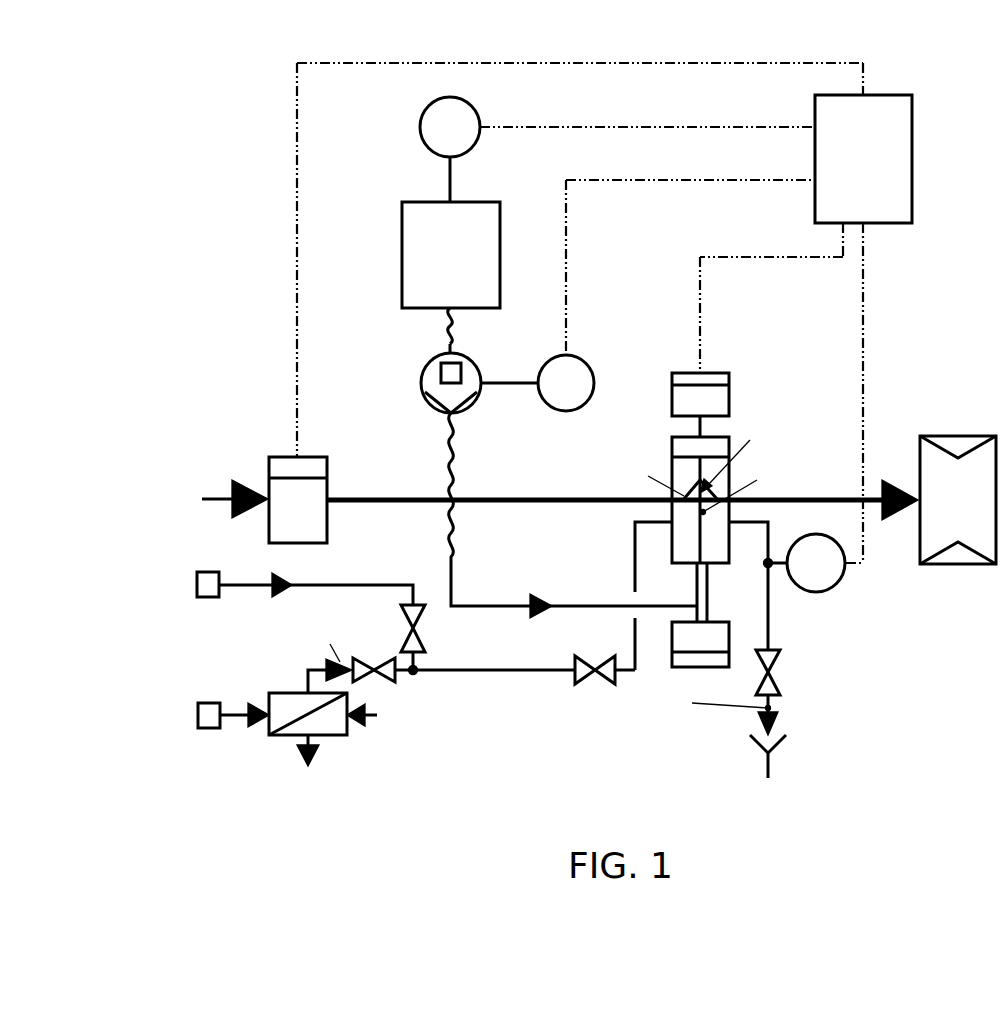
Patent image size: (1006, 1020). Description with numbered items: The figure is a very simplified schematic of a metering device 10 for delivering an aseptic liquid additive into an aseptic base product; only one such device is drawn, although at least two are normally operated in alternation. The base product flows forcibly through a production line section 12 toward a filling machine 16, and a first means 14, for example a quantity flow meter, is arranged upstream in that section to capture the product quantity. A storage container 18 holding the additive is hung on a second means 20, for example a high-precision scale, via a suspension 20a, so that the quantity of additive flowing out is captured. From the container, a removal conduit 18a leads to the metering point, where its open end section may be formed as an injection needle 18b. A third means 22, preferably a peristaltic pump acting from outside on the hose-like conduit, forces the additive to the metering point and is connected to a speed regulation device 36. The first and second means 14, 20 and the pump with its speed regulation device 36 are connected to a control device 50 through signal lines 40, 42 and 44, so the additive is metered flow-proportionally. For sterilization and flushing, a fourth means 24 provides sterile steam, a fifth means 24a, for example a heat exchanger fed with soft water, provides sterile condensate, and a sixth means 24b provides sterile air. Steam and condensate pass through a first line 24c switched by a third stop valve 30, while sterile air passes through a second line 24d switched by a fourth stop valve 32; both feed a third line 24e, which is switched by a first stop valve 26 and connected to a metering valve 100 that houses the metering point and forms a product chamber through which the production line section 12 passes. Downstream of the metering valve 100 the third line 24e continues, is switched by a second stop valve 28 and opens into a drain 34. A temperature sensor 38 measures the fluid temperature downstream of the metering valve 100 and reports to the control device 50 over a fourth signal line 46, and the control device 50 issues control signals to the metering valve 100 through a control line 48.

The metering device 10 is at (270, 112).
The production line section 12 is at (523, 498).
The first means 14 is at (258, 500).
The filling machine 16 is at (958, 500).
The storage container 18 is at (418, 276).
The removal conduit 18a is at (447, 444).
The injection needle 18b is at (700, 545).
The second means 20 is at (450, 127).
The suspension 20a is at (450, 177).
The third means 22 is at (448, 398).
The fourth means 24 is at (208, 716).
The fifth means 24a is at (325, 718).
The sixth means 24b is at (209, 584).
The first line 24c is at (307, 685).
The second line 24d is at (334, 584).
The third line 24e is at (465, 670).
The first stop valve 26 is at (582, 672).
The second stop valve 28 is at (769, 657).
The third stop valve 30 is at (384, 669).
The fourth stop valve 32 is at (416, 628).
The drain 34 is at (768, 758).
The speed regulation device 36 is at (537, 383).
The temperature sensor 38 is at (787, 586).
The signal line 40 is at (519, 63).
The signal line 42 is at (596, 127).
The signal line 44 is at (650, 180).
The fourth signal line 46 is at (863, 342).
The control line 48 is at (700, 295).
The control device 50 is at (863, 159).
The metering valve 100 is at (750, 352).